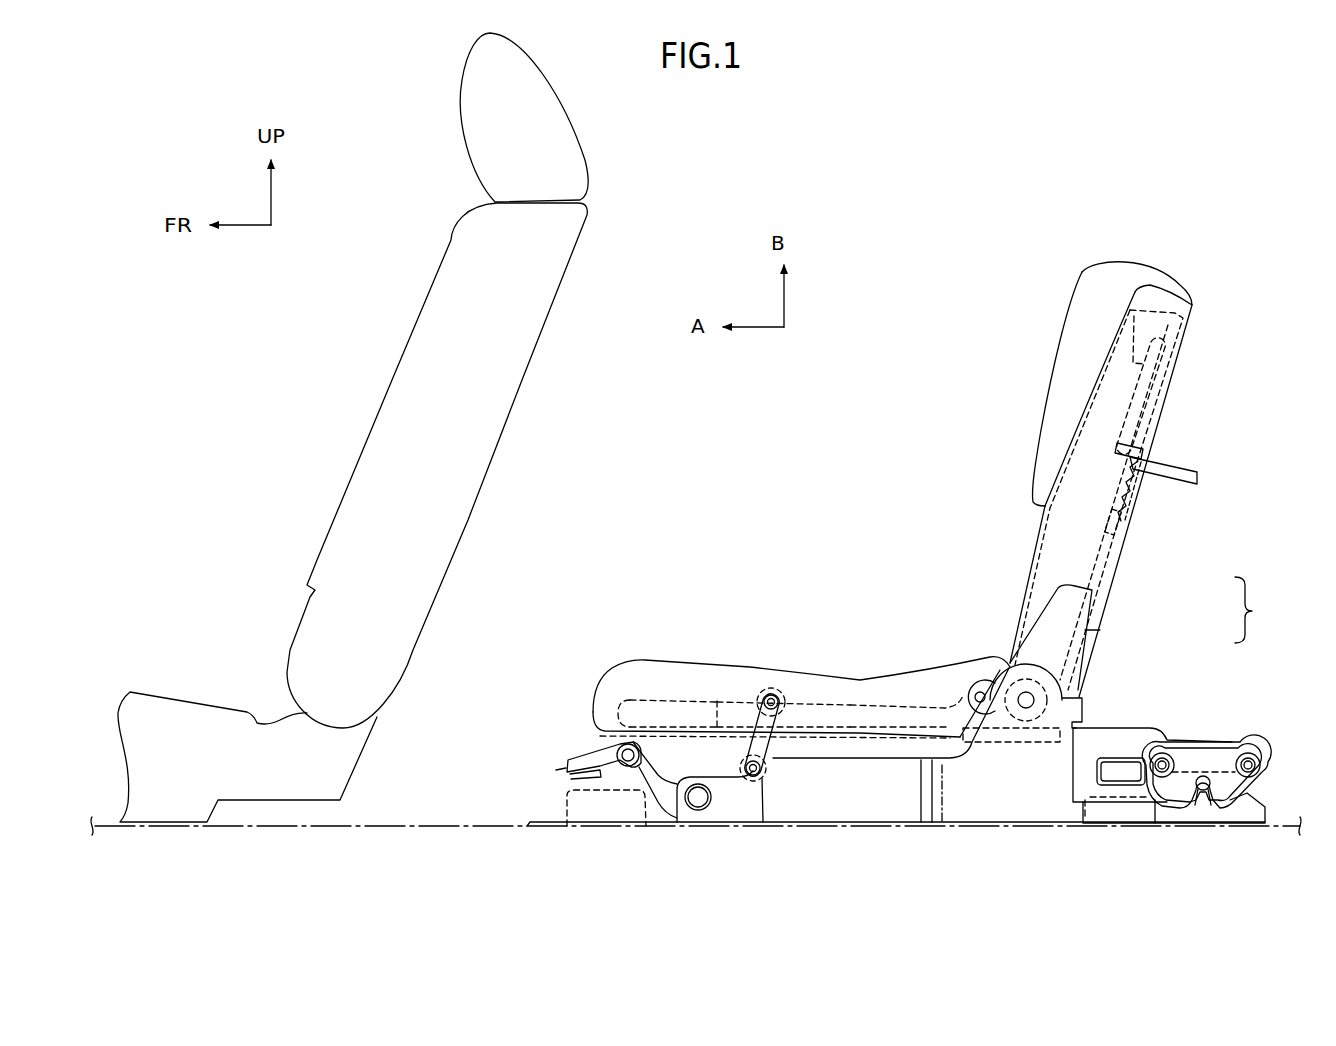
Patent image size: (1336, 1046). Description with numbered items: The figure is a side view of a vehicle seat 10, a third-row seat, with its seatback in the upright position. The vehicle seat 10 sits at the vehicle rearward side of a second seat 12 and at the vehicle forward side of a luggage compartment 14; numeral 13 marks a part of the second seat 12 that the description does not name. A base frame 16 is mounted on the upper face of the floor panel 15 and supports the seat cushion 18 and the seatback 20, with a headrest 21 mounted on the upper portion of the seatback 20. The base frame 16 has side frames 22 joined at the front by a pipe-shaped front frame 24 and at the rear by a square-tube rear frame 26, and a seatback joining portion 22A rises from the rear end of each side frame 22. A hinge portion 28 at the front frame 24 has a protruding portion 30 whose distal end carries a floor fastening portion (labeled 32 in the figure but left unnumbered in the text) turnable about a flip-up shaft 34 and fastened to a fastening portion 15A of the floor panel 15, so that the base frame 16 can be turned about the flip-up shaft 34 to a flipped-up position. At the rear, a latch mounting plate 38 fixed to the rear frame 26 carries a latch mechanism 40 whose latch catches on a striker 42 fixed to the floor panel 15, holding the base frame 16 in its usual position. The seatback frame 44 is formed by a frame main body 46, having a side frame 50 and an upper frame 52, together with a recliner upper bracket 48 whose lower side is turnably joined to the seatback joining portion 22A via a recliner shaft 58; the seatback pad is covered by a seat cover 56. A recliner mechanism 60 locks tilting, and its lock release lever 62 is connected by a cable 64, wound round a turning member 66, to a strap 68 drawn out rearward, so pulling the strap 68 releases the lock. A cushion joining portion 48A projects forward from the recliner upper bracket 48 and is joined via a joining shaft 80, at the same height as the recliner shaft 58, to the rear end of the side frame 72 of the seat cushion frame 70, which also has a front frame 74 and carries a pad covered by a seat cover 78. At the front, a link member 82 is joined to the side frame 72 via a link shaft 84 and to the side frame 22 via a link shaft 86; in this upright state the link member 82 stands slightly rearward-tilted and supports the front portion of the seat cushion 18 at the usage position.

The vehicle seat 10 is at (890, 489).
The second seat 12 is at (318, 473).
The front seat back 13 is at (408, 305).
The luggage compartment 14 is at (1299, 504).
The floor panel 15 is at (442, 824).
The fastening portion 15A is at (563, 792).
The base frame 16 is at (857, 828).
The seat cushion 18 is at (670, 658).
The seatback 20 is at (1162, 420).
The headrest 21 is at (1070, 301).
The side frame 22 is at (918, 812).
The seatback joining portion 22A is at (1068, 682).
The front frame 24 is at (698, 811).
The rear frame 26 is at (1122, 790).
The hinge portion 28 is at (574, 748).
The protruding portion 30 is at (674, 798).
The link arm 32 is at (594, 747).
The flip-up shaft 34 is at (627, 767).
The latch mounting plate 38 is at (1162, 735).
The latch mechanism 40 is at (1228, 755).
The striker 42 is at (1203, 790).
The seatback frame 44 is at (1260, 610).
The frame main body 46 is at (1112, 578).
The recliner upper bracket 48 is at (1100, 630).
The cushion joining portion 48A is at (1000, 668).
The side frame 50 is at (1048, 575).
The upper frame 52 is at (1168, 378).
The seat cover 56 is at (1040, 520).
The recliner shaft 58 is at (1010, 665).
The recliner mechanism 60 is at (1014, 740).
The lock release lever 62 is at (1047, 740).
The cable 64 is at (1124, 541).
The turning member 66 is at (1138, 495).
The strap 68 is at (1172, 460).
The seat cushion frame 70 is at (863, 698).
The side frame 72 is at (814, 700).
The front frame 74 is at (645, 700).
The seat cover 78 is at (710, 659).
The joining shaft 80 is at (976, 692).
The link member 82 is at (762, 779).
The link shaft 84 is at (771, 695).
The link shaft 86 is at (754, 780).